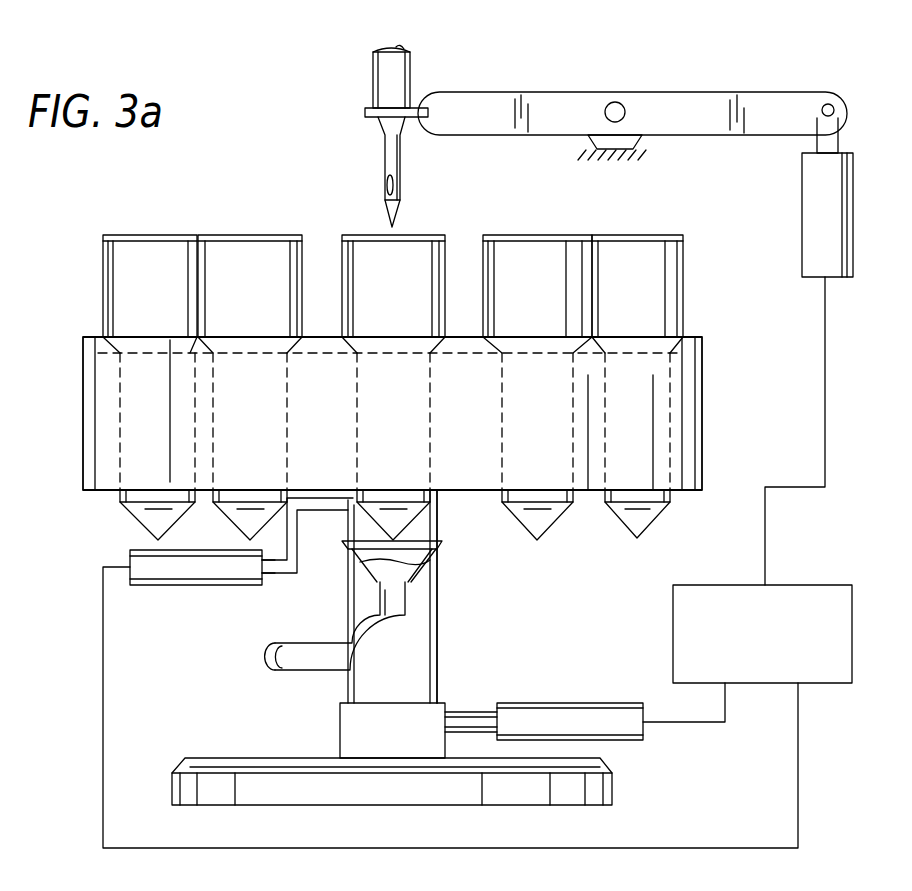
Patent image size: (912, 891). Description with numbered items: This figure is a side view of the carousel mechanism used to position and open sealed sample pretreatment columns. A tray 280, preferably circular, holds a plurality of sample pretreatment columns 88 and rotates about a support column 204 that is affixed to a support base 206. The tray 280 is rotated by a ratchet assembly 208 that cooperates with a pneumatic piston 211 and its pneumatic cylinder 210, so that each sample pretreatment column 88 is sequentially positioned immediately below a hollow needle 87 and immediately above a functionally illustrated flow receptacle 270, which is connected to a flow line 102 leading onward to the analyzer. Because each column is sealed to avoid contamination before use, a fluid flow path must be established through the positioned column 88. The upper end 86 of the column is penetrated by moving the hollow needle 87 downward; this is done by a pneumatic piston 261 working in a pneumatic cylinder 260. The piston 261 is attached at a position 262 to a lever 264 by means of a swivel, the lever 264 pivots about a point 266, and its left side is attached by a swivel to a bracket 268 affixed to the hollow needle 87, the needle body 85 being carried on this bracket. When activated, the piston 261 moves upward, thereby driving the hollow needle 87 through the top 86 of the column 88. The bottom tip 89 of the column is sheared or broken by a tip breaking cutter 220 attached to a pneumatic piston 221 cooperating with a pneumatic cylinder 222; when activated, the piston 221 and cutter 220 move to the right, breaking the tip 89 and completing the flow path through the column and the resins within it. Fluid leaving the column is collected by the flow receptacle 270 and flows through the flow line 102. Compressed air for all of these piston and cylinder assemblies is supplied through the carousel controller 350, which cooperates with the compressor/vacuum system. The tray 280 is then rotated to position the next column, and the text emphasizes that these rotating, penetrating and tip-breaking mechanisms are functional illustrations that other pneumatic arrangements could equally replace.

The needle body 85 is at (373, 70).
The hollow needle 87 is at (385, 160).
The bracket 268 is at (421, 107).
The lever 264 is at (565, 100).
The pivot point 266 is at (624, 106).
The piston attachment position 262 is at (827, 103).
The pneumatic piston 261 is at (812, 147).
The pneumatic cylinder 260 is at (802, 222).
The upper end of column 86 is at (233, 235).
The tray 280 is at (318, 350).
The sample pretreatment column 88 is at (290, 447).
The bottom tip of column 89 is at (400, 520).
The flow receptacle 270 is at (425, 572).
The flow line 102 is at (282, 672).
The support column 204 is at (430, 640).
The ratchet assembly 208 is at (400, 740).
The support base 206 is at (175, 790).
The pneumatic piston 211 is at (474, 708).
The pneumatic cylinder 210 is at (559, 703).
The tip breaking cutter 220 is at (322, 512).
The pneumatic piston 221 is at (272, 578).
The pneumatic cylinder 222 is at (185, 585).
The carousel controller 350 is at (673, 633).